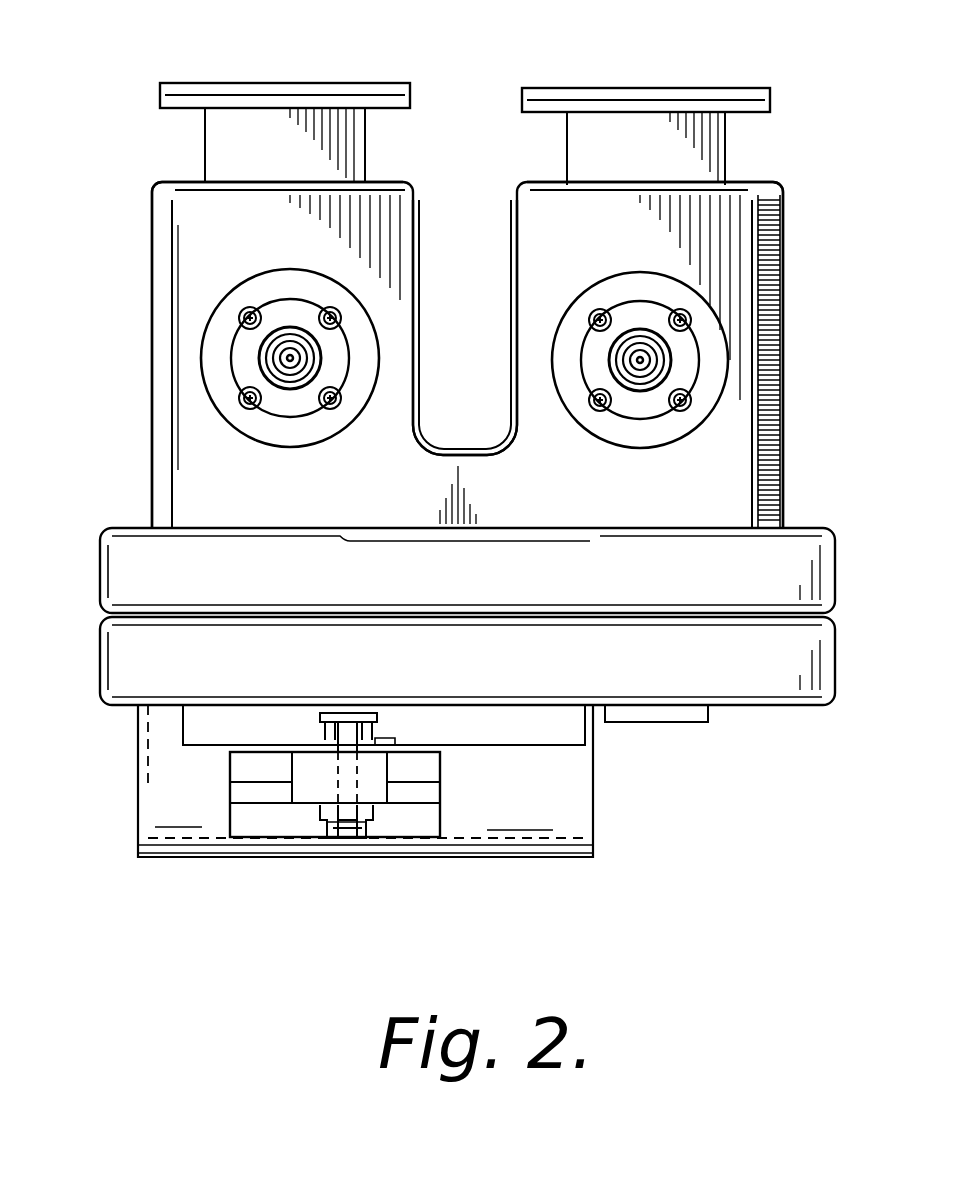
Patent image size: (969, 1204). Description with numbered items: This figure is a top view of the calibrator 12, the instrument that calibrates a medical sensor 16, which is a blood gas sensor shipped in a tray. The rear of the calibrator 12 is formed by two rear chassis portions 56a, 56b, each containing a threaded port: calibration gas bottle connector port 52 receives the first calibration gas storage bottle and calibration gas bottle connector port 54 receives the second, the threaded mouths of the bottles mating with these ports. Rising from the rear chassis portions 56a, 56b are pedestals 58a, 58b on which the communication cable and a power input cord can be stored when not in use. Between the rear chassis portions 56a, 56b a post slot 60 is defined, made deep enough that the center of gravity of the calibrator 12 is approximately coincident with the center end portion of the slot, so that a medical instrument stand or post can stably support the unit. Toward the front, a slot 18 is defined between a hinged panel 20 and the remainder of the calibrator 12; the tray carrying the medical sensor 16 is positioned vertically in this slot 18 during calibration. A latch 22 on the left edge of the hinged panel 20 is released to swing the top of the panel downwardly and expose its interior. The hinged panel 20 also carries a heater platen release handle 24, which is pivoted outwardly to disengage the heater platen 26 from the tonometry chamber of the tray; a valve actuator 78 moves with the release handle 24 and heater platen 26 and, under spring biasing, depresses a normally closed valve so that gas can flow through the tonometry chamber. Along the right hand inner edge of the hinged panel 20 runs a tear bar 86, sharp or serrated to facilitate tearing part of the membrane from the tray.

The calibrator 12 is at (727, 782).
The medical sensor 16 is at (355, 780).
The slot 18 is at (193, 712).
The hinged panel 20 is at (137, 832).
The latch 22 is at (138, 773).
The heater platen release handle 24 is at (262, 830).
The heater platen 26 is at (318, 712).
The calibration gas bottle connector port 52 is at (640, 360).
The calibration gas bottle connector port 54 is at (290, 358).
The rear chassis portion 56a is at (748, 232).
The rear chassis portion 56b is at (182, 236).
The pedestal 58a is at (752, 88).
The pedestal 58b is at (177, 82).
The post slot 60 is at (455, 322).
The valve actuator 78 is at (383, 740).
The tear bar 86 is at (595, 740).